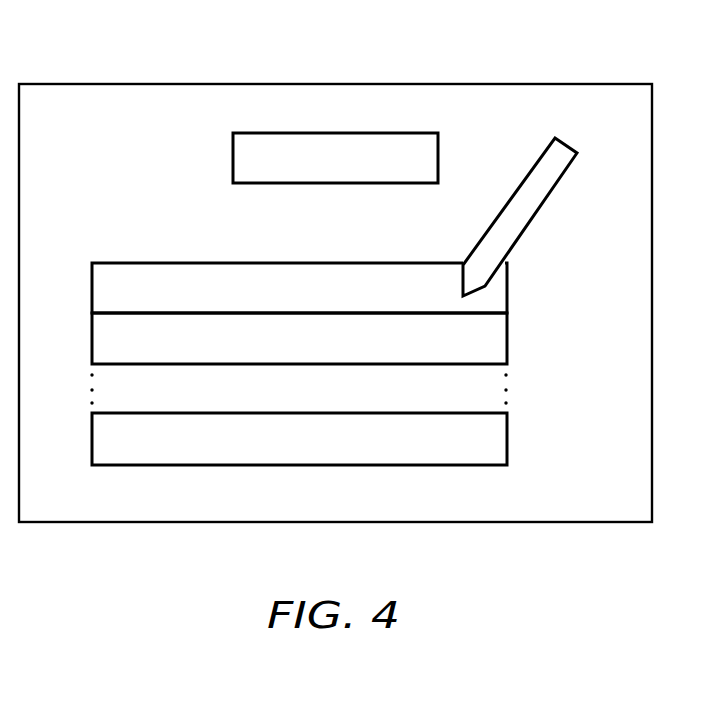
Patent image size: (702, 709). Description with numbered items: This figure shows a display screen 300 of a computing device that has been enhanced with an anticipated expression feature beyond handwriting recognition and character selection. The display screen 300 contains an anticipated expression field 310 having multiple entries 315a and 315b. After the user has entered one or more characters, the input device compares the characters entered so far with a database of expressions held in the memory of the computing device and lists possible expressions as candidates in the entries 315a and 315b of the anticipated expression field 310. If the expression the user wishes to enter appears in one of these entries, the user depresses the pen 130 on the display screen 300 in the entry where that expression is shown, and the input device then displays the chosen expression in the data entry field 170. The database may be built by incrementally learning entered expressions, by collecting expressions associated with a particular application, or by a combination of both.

The display screen 300 is at (108, 84).
The data entry field 170 is at (427, 162).
The pen 130 is at (550, 175).
The anticipated expression field 310 is at (351, 329).
The entry 315a is at (495, 300).
The entry 315b is at (495, 348).